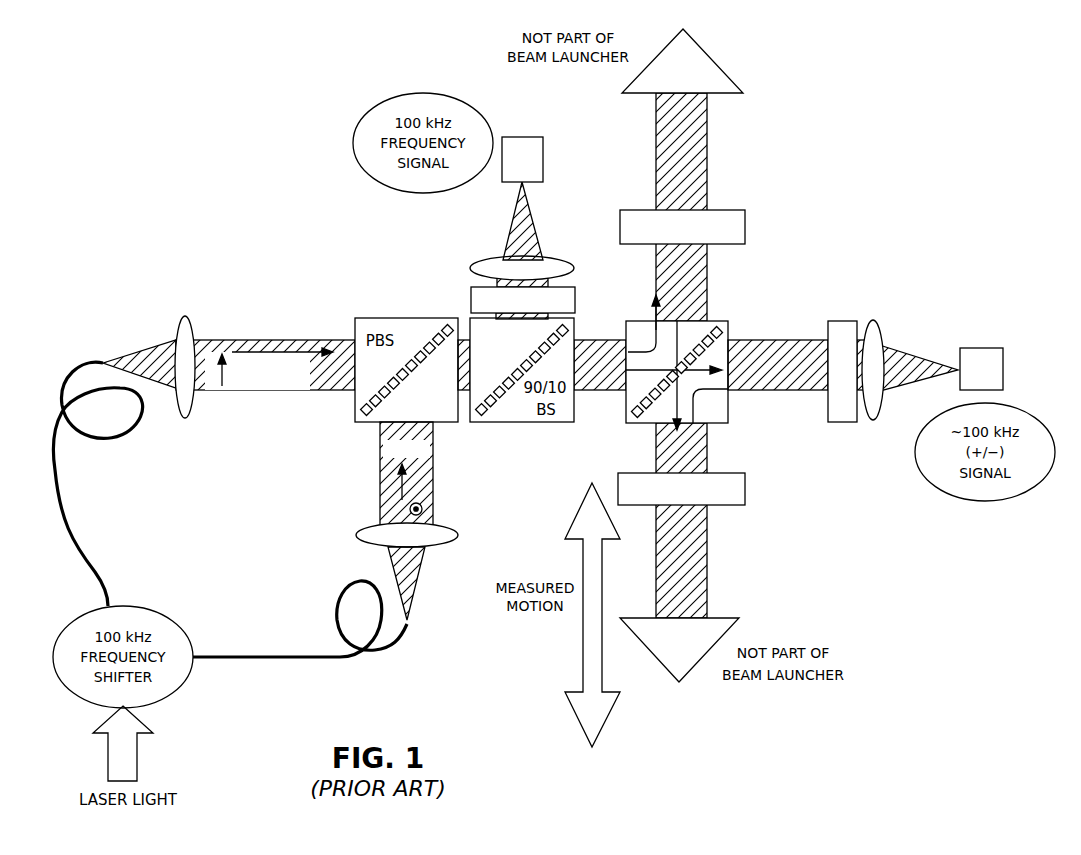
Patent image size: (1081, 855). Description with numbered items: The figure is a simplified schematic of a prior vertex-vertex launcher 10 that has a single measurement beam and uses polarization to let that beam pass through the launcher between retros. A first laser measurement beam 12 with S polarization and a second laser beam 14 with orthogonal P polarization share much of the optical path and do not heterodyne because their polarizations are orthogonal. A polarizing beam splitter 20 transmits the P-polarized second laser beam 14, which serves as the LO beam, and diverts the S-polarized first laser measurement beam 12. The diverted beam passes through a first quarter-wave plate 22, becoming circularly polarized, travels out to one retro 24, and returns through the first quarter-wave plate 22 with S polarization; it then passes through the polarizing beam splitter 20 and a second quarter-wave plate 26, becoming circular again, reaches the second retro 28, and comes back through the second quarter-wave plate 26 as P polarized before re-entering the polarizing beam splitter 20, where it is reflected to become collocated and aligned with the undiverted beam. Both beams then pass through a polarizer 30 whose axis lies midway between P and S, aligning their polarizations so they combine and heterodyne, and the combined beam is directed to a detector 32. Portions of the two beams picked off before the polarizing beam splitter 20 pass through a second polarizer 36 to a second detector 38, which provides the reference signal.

The vertex-vertex launcher 10 is at (896, 148).
The first laser measurement beam 12 is at (380, 470).
The second laser beam 14 is at (268, 393).
The polarizing beam splitter 20 is at (716, 321).
The first quarter-wave plate 22 is at (744, 211).
The retro 24 is at (715, 60).
The second quarter-wave plate 26 is at (718, 473).
The second retro 28 is at (722, 617).
The polarizer 30 is at (842, 321).
The detector 32 is at (978, 348).
The second polarizer 36 is at (471, 298).
The second detector 38 is at (521, 137).